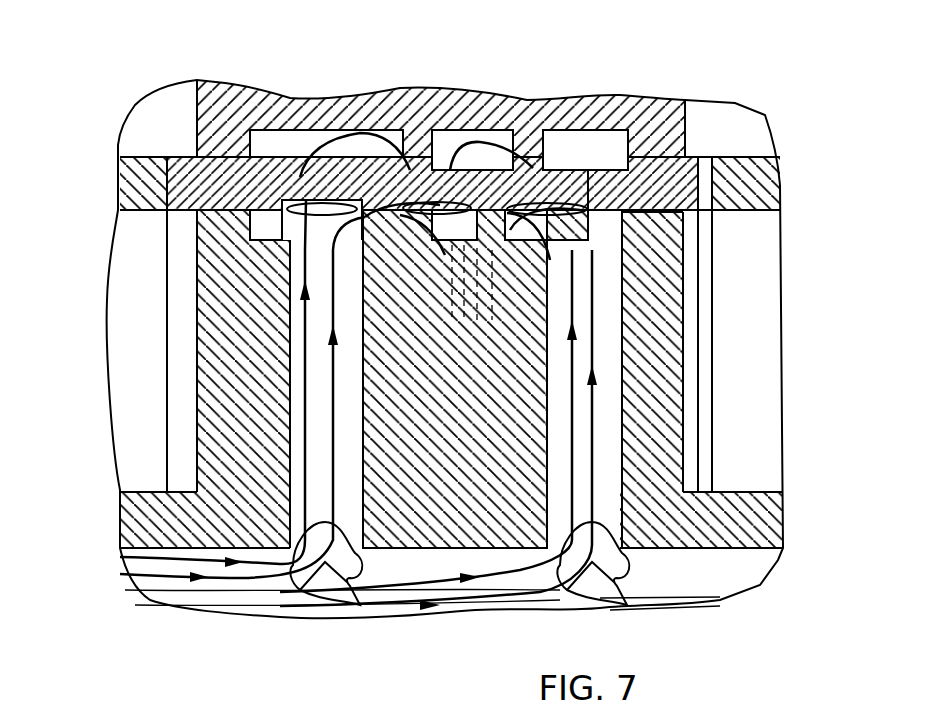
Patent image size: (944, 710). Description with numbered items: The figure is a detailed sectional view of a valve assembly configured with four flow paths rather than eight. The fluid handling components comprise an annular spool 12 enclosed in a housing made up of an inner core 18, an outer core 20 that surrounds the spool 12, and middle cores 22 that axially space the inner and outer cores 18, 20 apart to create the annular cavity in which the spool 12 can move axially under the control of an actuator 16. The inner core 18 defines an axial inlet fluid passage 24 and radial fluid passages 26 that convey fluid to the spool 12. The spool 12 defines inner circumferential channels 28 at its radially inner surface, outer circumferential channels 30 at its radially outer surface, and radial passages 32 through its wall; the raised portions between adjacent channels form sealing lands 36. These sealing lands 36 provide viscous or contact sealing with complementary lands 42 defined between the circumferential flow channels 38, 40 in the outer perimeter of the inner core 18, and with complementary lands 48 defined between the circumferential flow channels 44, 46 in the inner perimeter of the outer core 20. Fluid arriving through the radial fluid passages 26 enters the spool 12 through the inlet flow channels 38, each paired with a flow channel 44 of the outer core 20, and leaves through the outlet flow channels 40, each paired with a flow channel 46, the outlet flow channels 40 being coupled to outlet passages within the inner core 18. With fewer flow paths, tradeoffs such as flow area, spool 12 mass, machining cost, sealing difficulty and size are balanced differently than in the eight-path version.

The spool 12 is at (666, 165).
The actuator 16 is at (135, 105).
The inner core 18 is at (760, 520).
The outer core 20 is at (242, 108).
The middle cores 22 is at (118, 188).
The axial inlet fluid passage 24 is at (172, 583).
The radial fluid passages 26 is at (352, 438).
The inner circumferential channels 28 is at (593, 200).
The outer circumferential channels 30 is at (448, 200).
The radial passages 32 is at (320, 205).
The sealing lands 36 is at (378, 176).
The inlet flow channels 38 is at (263, 230).
The outlet flow channels 40 is at (445, 255).
The complementary lands 42 is at (513, 248).
The circumferential flow channels 44 is at (300, 137).
The circumferential flow channels 46 is at (473, 135).
The complementary lands 48 is at (418, 157).